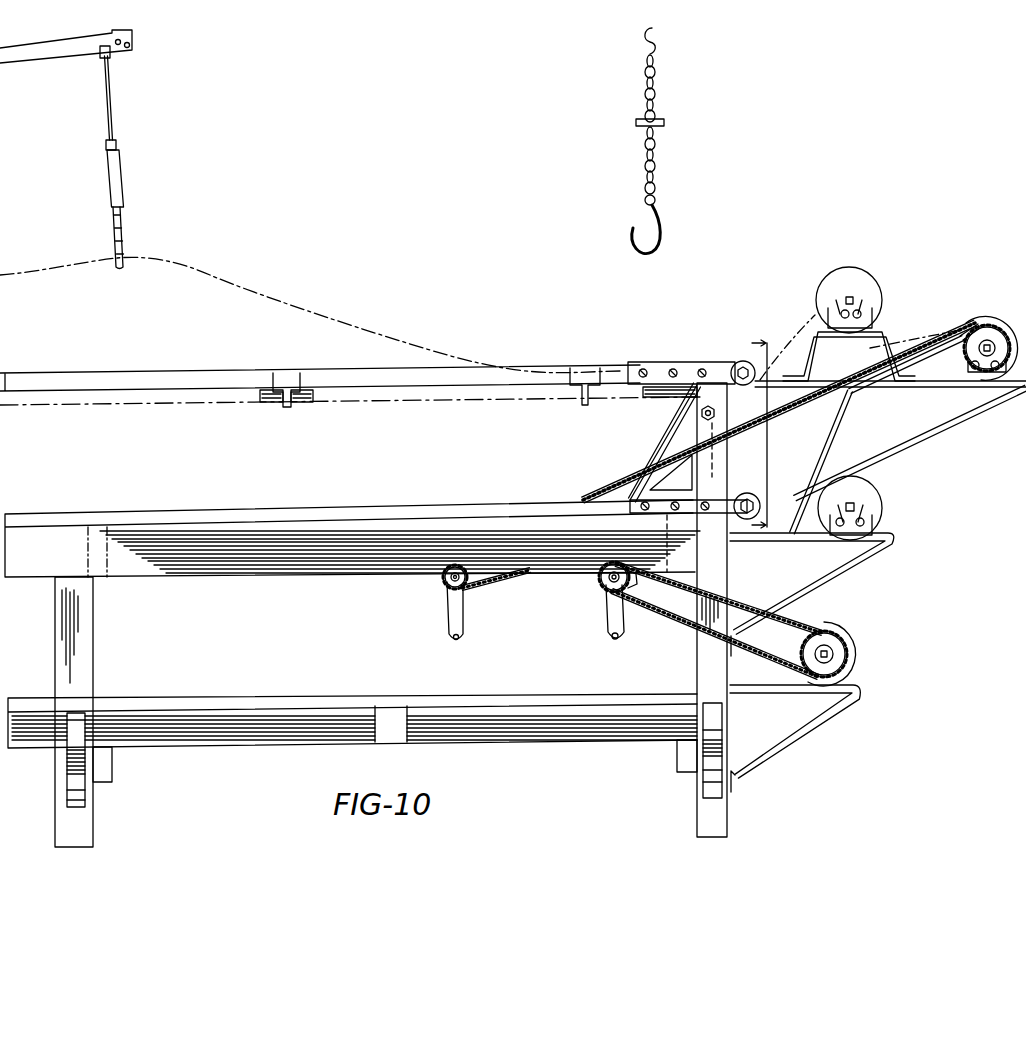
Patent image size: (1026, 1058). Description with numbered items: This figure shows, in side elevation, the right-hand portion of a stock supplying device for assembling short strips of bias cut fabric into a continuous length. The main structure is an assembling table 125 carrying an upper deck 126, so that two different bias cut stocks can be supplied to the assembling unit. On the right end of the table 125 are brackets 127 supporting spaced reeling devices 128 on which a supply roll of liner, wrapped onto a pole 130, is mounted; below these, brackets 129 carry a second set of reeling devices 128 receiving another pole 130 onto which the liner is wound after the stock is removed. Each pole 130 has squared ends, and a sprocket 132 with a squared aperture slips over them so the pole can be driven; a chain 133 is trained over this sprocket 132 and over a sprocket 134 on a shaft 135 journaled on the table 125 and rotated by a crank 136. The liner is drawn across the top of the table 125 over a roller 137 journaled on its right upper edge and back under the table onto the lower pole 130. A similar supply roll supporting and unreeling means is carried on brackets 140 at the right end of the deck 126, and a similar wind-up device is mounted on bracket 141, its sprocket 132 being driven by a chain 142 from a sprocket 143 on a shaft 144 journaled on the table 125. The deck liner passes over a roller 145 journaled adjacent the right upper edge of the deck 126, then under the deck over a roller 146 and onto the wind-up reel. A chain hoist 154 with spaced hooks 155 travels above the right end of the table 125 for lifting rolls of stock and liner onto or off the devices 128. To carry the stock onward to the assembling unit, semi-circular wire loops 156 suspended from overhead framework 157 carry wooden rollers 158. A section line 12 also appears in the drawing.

The section line 12 is at (747, 437).
The assembling table 125 is at (215, 518).
The upper deck 126 is at (200, 383).
The brackets 127 is at (862, 560).
The reeling devices 128 is at (870, 300).
The brackets 129 is at (820, 720).
The pole 130 is at (850, 293).
The sprocket 132 is at (800, 647).
The chain 133 is at (763, 603).
The sprocket 134 is at (630, 585).
The shaft 135 is at (610, 580).
The crank 136 is at (612, 630).
The roller 137 is at (757, 500).
The brackets 140 is at (887, 333).
The bracket 141 is at (963, 420).
The chain 142 is at (623, 487).
The sprocket 143 is at (445, 585).
The shaft 144 is at (470, 588).
The roller 145 is at (735, 365).
The roller 146 is at (718, 412).
The chain hoist 154 is at (657, 108).
The hooks 155 is at (660, 227).
The semi-circular wire loops 156 is at (125, 208).
The overhead framework 157 is at (43, 50).
The wooden rollers 158 is at (118, 237).